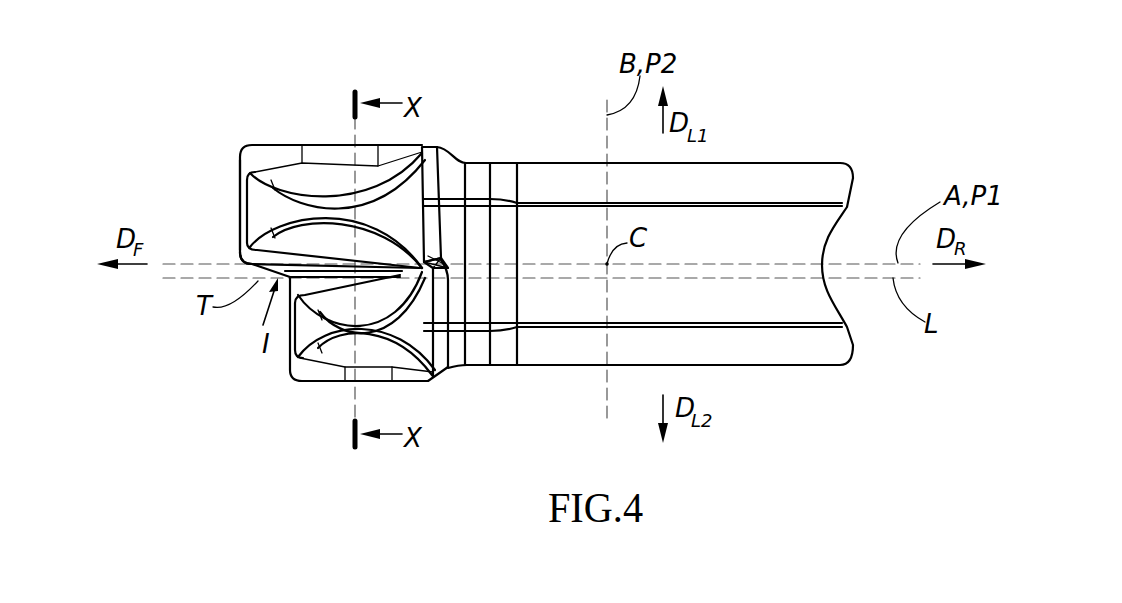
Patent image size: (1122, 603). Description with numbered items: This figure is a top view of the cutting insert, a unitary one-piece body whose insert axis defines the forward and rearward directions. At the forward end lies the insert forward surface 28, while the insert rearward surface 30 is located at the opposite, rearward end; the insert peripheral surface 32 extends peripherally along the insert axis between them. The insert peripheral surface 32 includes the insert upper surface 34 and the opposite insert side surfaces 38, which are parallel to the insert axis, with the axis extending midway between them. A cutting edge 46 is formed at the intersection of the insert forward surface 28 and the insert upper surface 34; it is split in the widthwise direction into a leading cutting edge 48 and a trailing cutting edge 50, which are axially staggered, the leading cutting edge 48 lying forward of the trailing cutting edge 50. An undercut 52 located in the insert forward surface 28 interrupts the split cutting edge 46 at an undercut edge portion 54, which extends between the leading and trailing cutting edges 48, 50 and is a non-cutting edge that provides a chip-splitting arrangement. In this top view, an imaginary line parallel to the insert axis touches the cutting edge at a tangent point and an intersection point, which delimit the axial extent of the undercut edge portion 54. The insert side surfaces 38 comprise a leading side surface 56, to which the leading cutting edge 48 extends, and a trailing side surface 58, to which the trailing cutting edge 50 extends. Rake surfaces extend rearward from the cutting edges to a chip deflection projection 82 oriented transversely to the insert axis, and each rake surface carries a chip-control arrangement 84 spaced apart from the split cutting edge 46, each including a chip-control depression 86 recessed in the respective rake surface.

The insert forward surface 28 is at (238, 170).
The insert rearward surface 30 is at (840, 222).
The insert peripheral surface 32 is at (777, 153).
The insert upper surface 34 is at (713, 237).
The insert side surfaces 38 is at (633, 110).
The leading side surface 56 is at (710, 163).
The trailing side surface 58 is at (740, 365).
The cutting edge 46 is at (225, 205).
The leading cutting edge 48 is at (243, 232).
The trailing cutting edge 50 is at (288, 348).
The undercut 52 is at (276, 283).
The undercut edge portion 54 is at (268, 272).
The chip deflection projection 82 is at (452, 228).
The chip-control arrangement 84 is at (312, 273).
The chip-control depression 86 is at (313, 173).